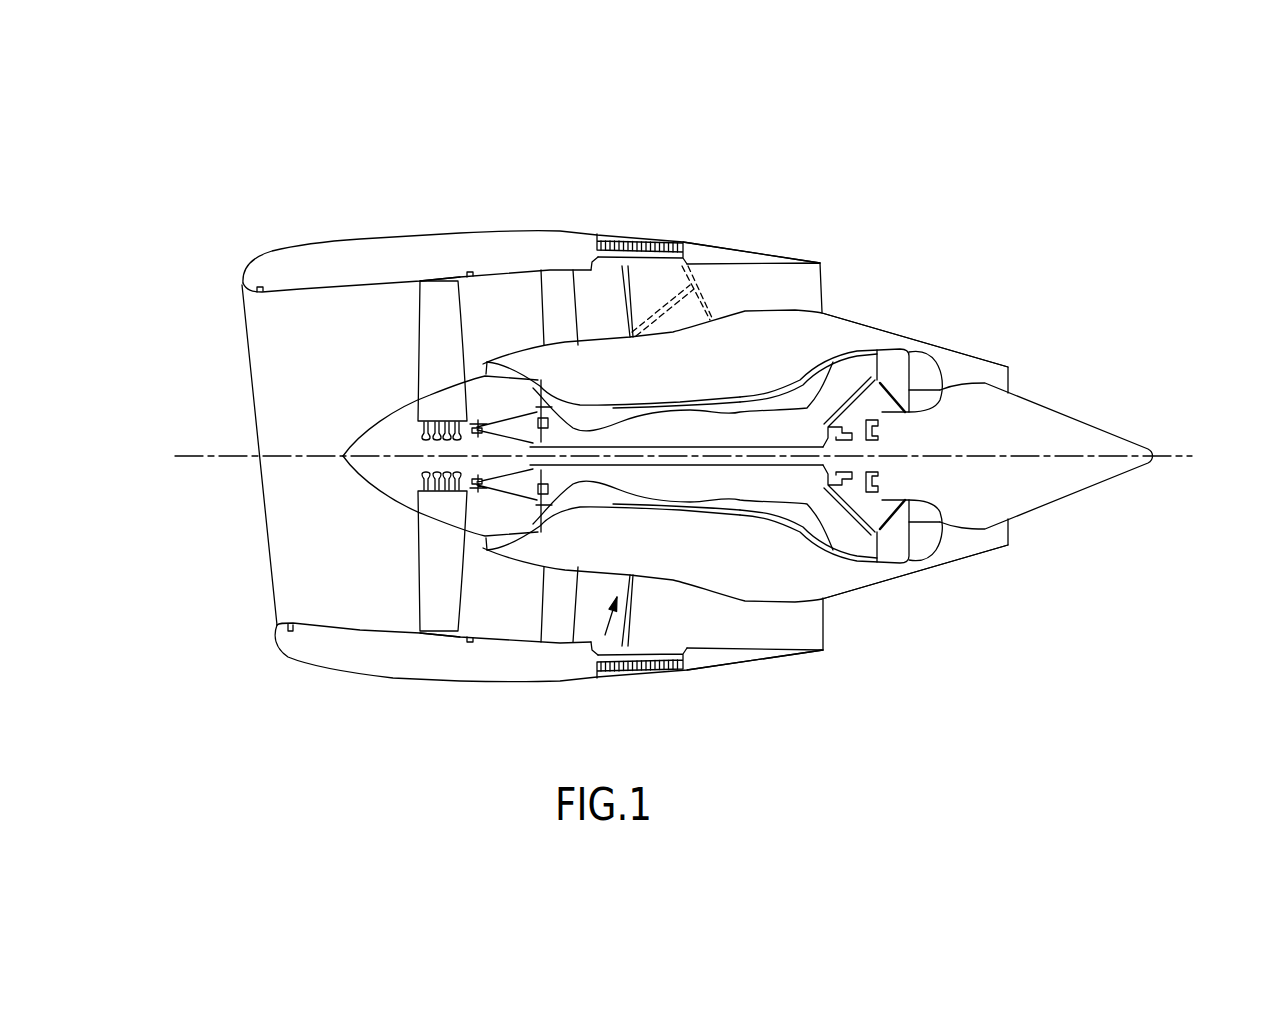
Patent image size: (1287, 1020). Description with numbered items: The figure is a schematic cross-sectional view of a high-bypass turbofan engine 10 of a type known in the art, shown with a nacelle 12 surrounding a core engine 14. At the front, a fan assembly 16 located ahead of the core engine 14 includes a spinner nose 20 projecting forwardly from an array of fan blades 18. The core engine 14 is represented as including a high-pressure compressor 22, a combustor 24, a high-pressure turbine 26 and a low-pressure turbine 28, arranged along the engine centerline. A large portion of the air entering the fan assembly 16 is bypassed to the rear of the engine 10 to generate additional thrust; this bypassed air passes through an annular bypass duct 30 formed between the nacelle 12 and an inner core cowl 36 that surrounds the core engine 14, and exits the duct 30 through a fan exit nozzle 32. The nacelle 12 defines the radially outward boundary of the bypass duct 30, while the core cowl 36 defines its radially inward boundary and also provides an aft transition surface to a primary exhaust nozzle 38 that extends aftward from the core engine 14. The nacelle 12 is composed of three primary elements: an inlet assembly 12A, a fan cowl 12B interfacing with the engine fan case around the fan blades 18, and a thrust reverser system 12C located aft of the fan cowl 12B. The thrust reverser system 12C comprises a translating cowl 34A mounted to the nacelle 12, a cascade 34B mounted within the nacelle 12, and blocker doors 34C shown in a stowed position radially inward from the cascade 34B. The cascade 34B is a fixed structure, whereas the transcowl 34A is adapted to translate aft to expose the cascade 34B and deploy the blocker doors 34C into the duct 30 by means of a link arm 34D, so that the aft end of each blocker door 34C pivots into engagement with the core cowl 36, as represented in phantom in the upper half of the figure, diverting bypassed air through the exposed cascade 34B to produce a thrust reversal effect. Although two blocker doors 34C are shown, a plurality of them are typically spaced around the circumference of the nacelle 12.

The high-bypass turbofan engine 10 is at (884, 164).
The nacelle 12 is at (433, 213).
The inlet assembly 12A is at (342, 240).
The fan cowl 12B is at (510, 232).
The thrust reverser system 12C is at (607, 213).
The core engine 14 is at (850, 568).
The fan assembly 16 is at (363, 557).
The fan blades 18 is at (428, 333).
The spinner nose 20 is at (380, 477).
The high-pressure compressor 22 is at (593, 417).
The combustor 24 is at (738, 410).
The high-pressure turbine 26 is at (780, 510).
The low-pressure turbine 28 is at (857, 367).
The bypass duct 30 is at (513, 328).
The fan exit nozzle 32 is at (843, 278).
The translating cowl 34A is at (747, 248).
The cascade 34B is at (667, 247).
The blocker doors 34C is at (631, 265).
The link arm 34D is at (603, 305).
The core cowl 36 is at (733, 313).
The primary exhaust nozzle 38 is at (958, 353).